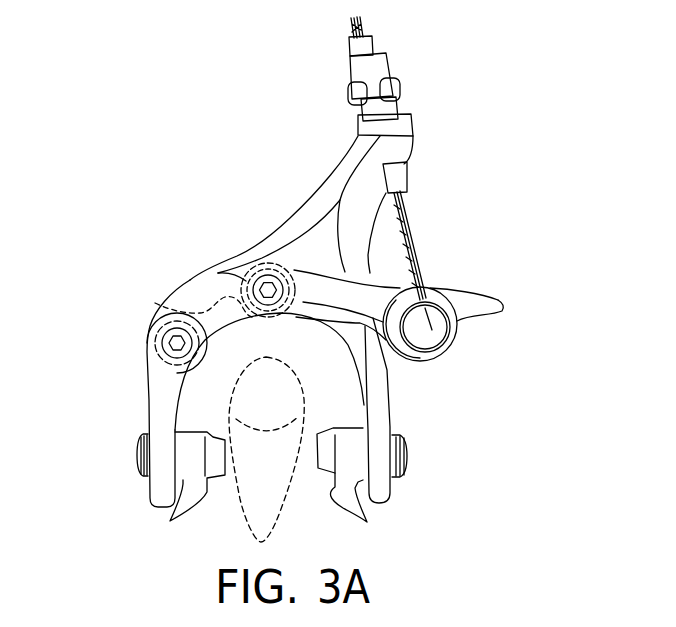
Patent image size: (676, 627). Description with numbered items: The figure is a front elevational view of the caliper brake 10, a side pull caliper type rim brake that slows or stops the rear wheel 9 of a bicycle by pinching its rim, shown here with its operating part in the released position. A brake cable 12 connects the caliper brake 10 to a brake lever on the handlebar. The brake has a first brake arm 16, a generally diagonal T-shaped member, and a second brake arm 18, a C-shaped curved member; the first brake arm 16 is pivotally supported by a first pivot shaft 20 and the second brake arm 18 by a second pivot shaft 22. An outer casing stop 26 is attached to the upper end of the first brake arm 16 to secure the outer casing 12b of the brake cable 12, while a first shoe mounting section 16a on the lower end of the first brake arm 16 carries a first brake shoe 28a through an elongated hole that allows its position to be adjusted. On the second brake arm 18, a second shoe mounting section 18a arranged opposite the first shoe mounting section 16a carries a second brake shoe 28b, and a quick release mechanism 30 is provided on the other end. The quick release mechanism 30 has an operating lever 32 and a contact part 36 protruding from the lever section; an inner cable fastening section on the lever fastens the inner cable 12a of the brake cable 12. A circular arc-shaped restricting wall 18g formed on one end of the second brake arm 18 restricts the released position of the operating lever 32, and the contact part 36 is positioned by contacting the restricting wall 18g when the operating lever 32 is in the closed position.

The rear wheel 9 is at (243, 500).
The caliper brake 10 is at (172, 282).
The brake cable 12 is at (394, 52).
The inner cable 12a is at (418, 246).
The outer casing 12b is at (373, 44).
The first brake arm 16 is at (277, 247).
The first shoe mounting section 16a is at (393, 490).
The second brake arm 18 is at (133, 401).
The second shoe mounting section 18a is at (160, 470).
The restricting wall 18g is at (400, 296).
The first pivot shaft 20 is at (254, 288).
The second pivot shaft 22 is at (162, 333).
The outer casing stop 26 is at (412, 83).
The first brake shoe 28a is at (355, 443).
The second brake shoe 28b is at (150, 500).
The quick release mechanism 30 is at (507, 280).
The operating lever 32 is at (474, 270).
The contact part 36 is at (494, 306).